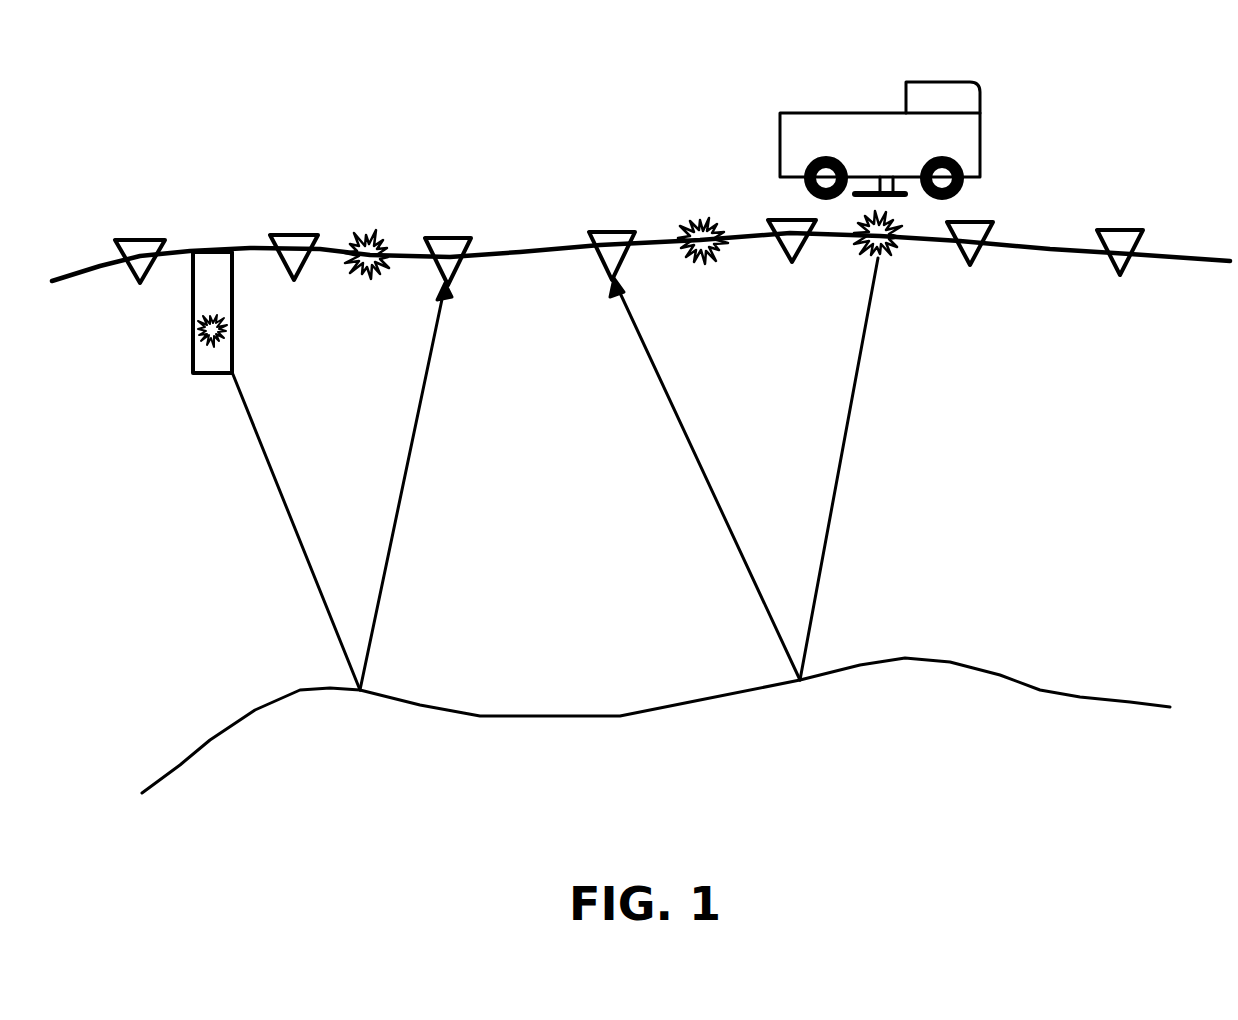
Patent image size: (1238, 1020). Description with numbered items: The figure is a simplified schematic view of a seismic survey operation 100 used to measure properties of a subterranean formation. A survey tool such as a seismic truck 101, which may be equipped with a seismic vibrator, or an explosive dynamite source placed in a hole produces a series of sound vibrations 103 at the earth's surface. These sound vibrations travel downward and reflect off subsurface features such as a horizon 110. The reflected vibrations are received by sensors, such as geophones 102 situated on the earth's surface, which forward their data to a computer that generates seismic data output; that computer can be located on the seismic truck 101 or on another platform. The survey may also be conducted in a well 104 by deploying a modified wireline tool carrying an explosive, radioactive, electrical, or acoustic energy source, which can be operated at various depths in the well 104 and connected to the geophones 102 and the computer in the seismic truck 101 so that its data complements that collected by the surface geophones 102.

The seismic survey system 100 is at (246, 120).
The seismic truck 101 is at (990, 143).
The geophones 102 is at (284, 228).
The sound vibrations 103 is at (700, 215).
The well 104 is at (210, 290).
The horizon 110 is at (210, 734).